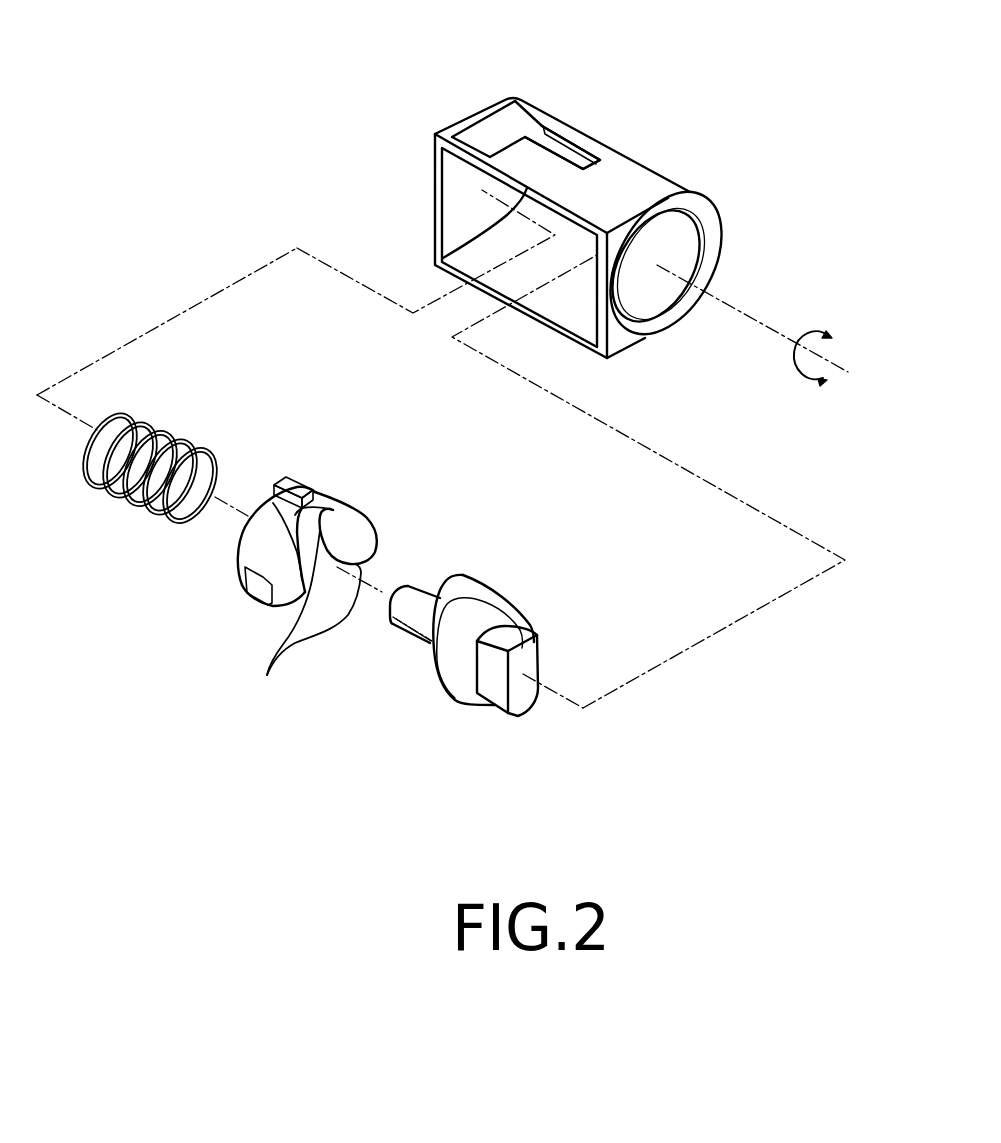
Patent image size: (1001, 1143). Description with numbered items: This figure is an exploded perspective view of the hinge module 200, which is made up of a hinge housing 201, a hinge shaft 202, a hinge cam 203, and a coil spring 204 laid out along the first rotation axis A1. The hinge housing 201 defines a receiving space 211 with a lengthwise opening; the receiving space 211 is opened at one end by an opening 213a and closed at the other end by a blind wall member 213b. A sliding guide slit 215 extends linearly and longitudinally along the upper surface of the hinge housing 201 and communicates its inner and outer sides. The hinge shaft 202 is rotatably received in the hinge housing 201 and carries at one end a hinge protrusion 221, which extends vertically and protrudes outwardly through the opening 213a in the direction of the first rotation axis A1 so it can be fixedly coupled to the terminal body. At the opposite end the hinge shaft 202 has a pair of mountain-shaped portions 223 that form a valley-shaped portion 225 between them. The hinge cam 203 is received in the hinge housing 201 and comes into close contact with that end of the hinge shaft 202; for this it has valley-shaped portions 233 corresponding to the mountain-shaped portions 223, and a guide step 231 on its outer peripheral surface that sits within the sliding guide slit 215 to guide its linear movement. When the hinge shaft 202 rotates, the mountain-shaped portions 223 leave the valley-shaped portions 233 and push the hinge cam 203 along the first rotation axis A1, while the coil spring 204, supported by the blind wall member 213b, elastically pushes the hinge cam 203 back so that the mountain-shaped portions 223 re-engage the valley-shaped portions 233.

The hinge module 200 is at (140, 80).
The hinge housing 201 is at (648, 150).
The receiving space 211 is at (640, 337).
The opening 213a is at (677, 227).
The blind wall member 213b is at (462, 192).
The sliding guide slit 215 is at (567, 157).
The first rotation axis A1 is at (763, 323).
The hinge shaft 202 is at (528, 740).
The hinge protrusion 221 is at (533, 650).
The mountain-shaped portions 223 is at (462, 585).
The valley-shaped portion 225 is at (428, 650).
The hinge cam 203 is at (241, 608).
The guide step 231 is at (288, 483).
The valley-shaped portions 233 is at (325, 510).
The coil spring 204 is at (110, 524).